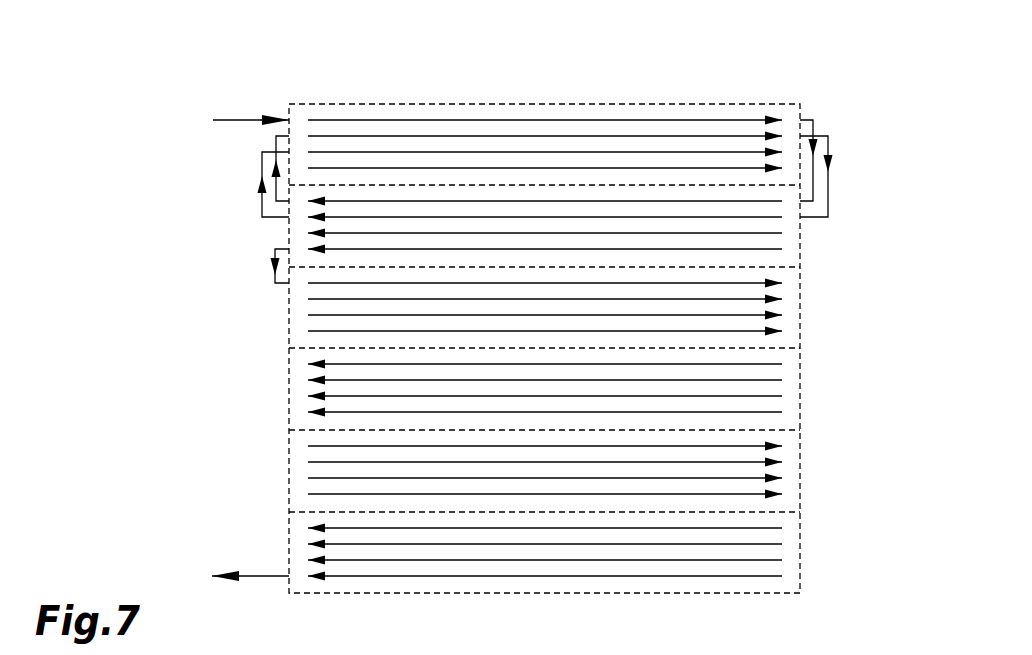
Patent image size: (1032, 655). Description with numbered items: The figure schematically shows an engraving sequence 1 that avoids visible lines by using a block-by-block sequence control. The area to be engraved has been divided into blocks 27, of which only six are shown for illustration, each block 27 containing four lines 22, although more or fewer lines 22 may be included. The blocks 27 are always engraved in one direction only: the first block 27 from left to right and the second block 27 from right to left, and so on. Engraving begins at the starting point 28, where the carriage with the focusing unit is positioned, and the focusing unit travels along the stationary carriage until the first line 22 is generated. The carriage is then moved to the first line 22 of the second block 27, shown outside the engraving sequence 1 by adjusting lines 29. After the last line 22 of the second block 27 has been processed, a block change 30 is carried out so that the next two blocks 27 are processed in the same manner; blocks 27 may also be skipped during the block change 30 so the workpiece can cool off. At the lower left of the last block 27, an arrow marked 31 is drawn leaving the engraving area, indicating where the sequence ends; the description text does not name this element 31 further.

The engraving sequence 1 is at (142, 82).
The line 22 is at (412, 200).
The block 27 is at (313, 140).
The starting point 28 is at (233, 118).
The adjusting line 29 is at (815, 132).
The block change 30 is at (275, 280).
The outlet 31 is at (267, 578).